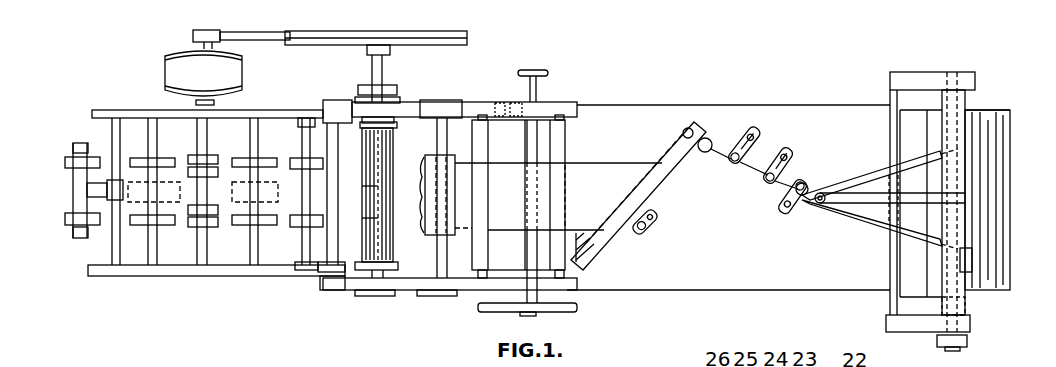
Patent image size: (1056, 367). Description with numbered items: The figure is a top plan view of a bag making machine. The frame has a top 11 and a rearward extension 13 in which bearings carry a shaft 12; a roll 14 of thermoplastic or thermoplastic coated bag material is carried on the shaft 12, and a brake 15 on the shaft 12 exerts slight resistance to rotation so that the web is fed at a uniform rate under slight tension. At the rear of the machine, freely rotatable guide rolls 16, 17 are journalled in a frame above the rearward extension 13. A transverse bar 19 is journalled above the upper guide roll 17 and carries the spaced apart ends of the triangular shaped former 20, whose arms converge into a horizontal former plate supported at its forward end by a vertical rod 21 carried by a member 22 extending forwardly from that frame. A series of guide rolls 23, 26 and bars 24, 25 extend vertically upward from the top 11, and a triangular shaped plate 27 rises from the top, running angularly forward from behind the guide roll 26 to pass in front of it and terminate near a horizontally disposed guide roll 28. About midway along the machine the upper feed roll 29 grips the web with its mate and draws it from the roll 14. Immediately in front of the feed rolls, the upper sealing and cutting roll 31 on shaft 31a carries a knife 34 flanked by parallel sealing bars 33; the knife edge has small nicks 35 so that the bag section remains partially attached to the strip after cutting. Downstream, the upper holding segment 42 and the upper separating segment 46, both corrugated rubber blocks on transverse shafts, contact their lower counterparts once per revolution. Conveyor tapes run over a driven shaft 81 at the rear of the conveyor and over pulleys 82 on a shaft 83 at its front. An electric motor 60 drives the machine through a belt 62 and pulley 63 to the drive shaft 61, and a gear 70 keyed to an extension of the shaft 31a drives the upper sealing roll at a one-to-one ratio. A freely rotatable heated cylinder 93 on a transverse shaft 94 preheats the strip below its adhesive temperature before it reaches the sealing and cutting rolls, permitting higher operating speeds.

The top 11 is at (672, 290).
The shaft 12 is at (527, 257).
The rearward extension 13 is at (968, 328).
The roll 14 is at (1008, 216).
The brake 15 is at (937, 341).
The guide roll 16 is at (905, 280).
The upper guide roll 17 is at (968, 272).
The transverse bar 19 is at (960, 178).
The triangular shaped former 20 is at (857, 178).
The vertical rod 21 is at (820, 193).
The member 22 is at (862, 206).
The guide roll 23 is at (784, 218).
The bar 24 is at (785, 152).
The bar 25 is at (756, 140).
The guide roll 26 is at (706, 152).
The triangular shaped plate 27 is at (616, 232).
The horizontally disposed guide roll 28 is at (562, 148).
The upper feed roll 29 is at (455, 160).
The upper sealing and cutting roll 31 is at (393, 151).
The shaft 31a is at (390, 269).
The sealing bars 33 is at (427, 195).
The knife 34 is at (375, 219).
The nicks 35 is at (375, 187).
The upper holding segment 42 is at (280, 172).
The upper separating segment 46 is at (181, 172).
The electric motor 60 is at (170, 74).
The drive shaft 61 is at (383, 67).
The belt 62 is at (270, 40).
The pulley 63 is at (327, 45).
The gear 70 is at (398, 91).
The driven shaft 81 is at (577, 308).
The pulleys 82 is at (527, 147).
The shaft 83 is at (548, 74).
The heated cylinder 93 is at (500, 105).
The transverse shaft 94 is at (516, 107).